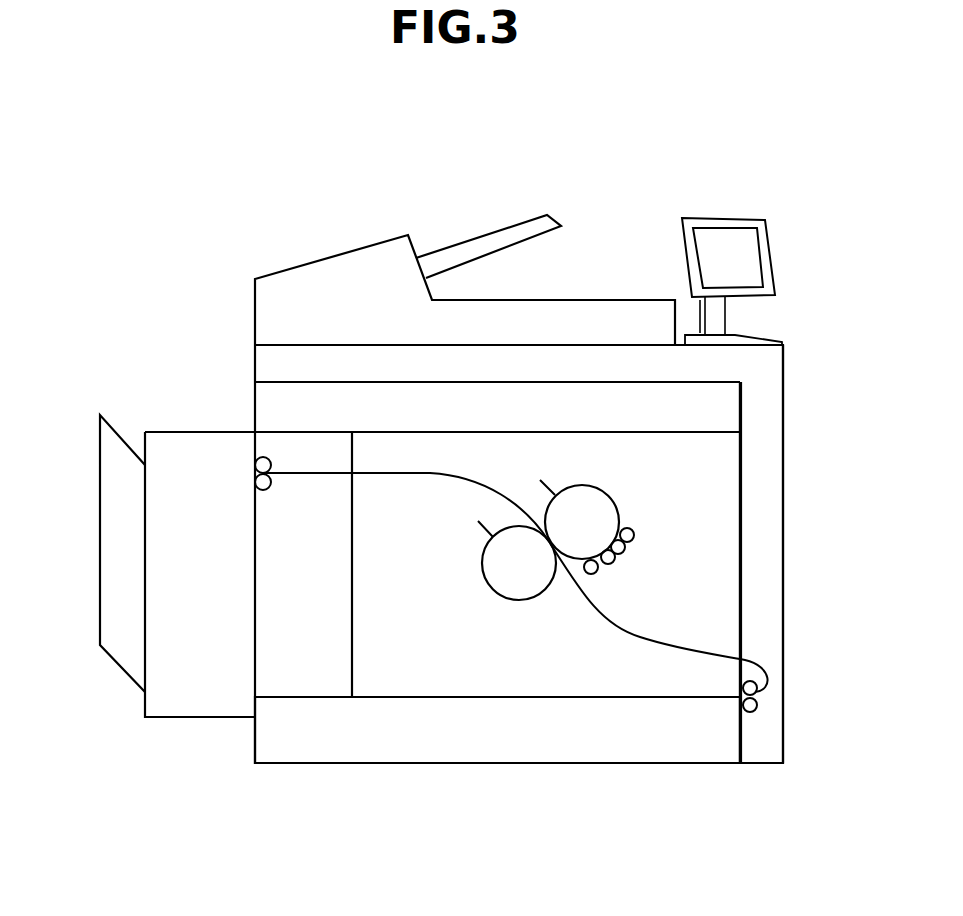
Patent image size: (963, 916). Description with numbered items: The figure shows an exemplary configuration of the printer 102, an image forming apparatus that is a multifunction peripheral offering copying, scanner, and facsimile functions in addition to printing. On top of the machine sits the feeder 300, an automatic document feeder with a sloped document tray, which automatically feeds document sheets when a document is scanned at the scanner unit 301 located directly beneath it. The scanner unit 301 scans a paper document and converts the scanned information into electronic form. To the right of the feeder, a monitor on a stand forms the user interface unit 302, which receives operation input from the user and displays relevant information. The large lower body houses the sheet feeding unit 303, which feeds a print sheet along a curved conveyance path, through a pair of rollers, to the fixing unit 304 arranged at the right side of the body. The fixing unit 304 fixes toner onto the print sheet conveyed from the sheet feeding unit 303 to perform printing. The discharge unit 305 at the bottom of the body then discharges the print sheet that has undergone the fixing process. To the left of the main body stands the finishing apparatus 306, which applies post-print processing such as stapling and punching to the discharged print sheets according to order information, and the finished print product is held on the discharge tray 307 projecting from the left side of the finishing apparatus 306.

The printer 102 is at (549, 160).
The feeder 300 is at (363, 247).
The scanner unit 301 is at (255, 366).
The user interface unit 302 is at (713, 218).
The sheet feeding unit 303 is at (533, 763).
The fixing unit 304 is at (741, 547).
The discharge unit 305 is at (305, 697).
The finishing apparatus 306 is at (217, 717).
The discharge tray 307 is at (112, 662).